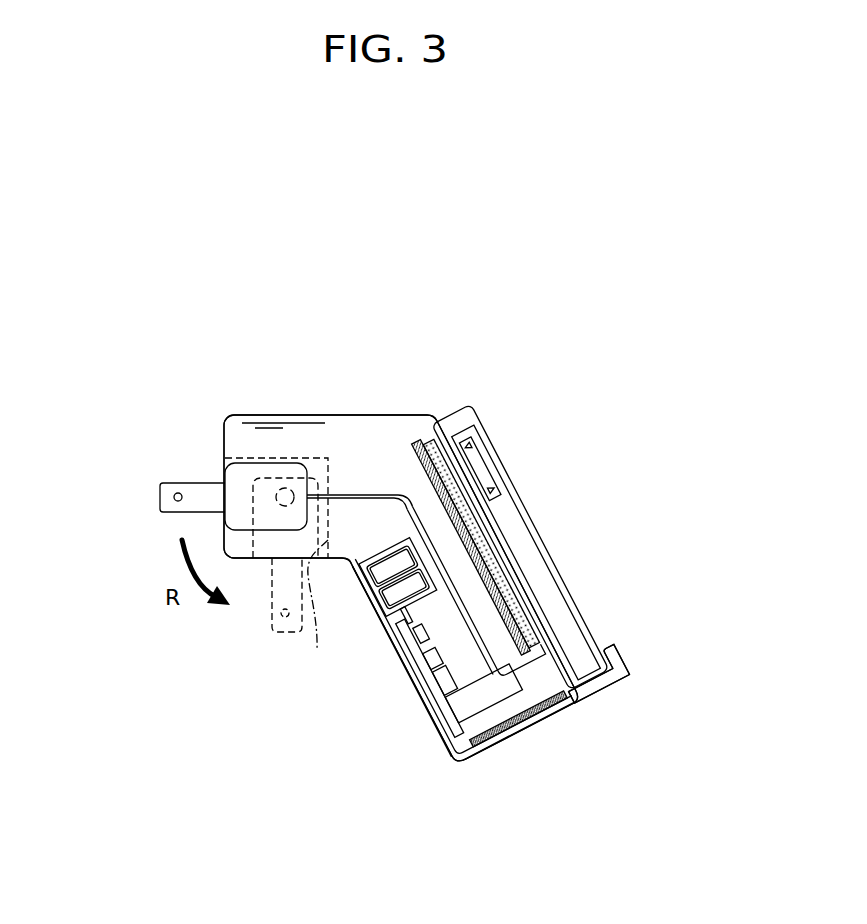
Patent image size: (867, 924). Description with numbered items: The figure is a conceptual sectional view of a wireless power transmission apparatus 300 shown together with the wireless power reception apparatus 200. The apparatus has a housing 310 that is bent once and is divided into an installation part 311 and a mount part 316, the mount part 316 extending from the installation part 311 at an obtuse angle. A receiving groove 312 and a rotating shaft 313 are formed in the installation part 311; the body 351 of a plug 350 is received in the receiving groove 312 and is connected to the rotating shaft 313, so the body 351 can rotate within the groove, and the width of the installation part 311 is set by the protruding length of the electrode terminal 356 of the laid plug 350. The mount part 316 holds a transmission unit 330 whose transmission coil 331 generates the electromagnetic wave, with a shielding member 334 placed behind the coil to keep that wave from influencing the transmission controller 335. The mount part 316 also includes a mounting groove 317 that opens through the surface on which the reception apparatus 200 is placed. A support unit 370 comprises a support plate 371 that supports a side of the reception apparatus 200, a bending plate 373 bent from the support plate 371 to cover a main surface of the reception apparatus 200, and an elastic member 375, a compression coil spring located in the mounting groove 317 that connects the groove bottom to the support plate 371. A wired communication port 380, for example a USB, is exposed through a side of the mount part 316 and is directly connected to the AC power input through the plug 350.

The wireless power transmission apparatus 300 is at (504, 342).
The housing 310 is at (243, 392).
The installation part 311 is at (296, 417).
The receiving groove 312 is at (373, 600).
The rotating shaft 313 is at (286, 490).
The mount part 316 is at (450, 731).
The mounting groove 317 is at (490, 753).
The transmission unit 330 is at (421, 410).
The transmission coil 331 is at (487, 549).
The shielding member 334 is at (458, 514).
The transmission controller 335 is at (443, 698).
The plug 350 is at (153, 534).
The body 351 is at (240, 477).
The electrode terminal 356 is at (160, 495).
The support unit 370 is at (643, 691).
The support plate 371 is at (612, 695).
The bending plate 373 is at (620, 660).
The elastic member 375 is at (550, 720).
The wired communication port 380 is at (385, 620).
The wireless power reception apparatus 200 is at (592, 578).